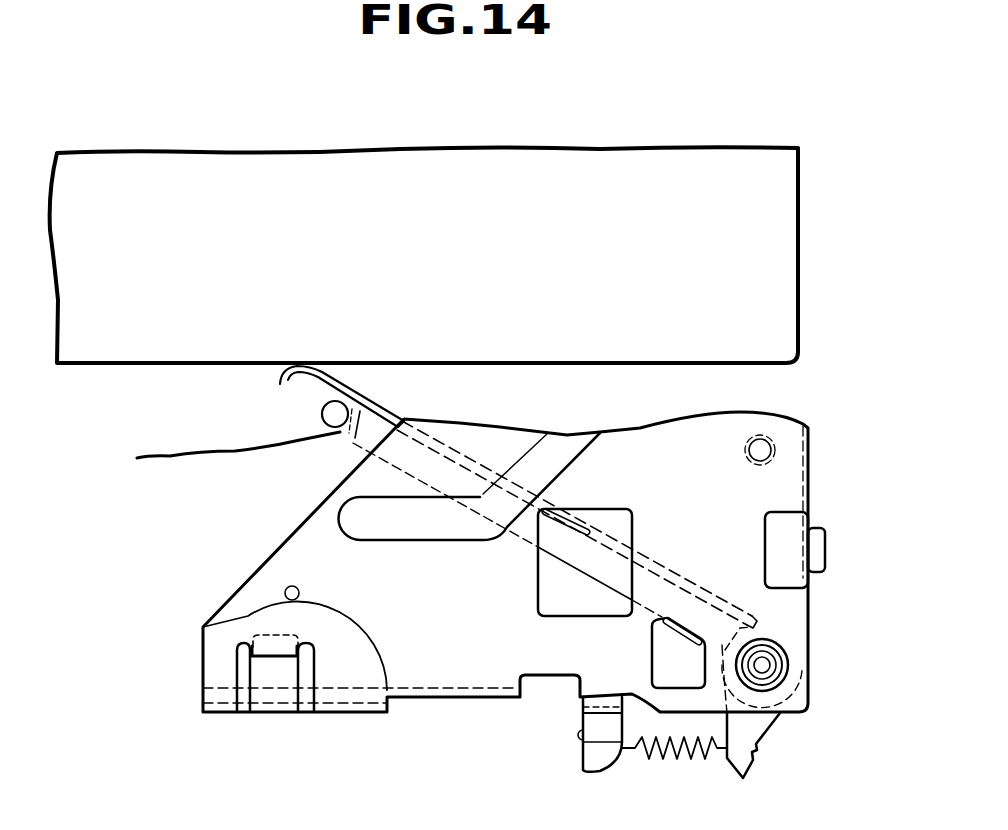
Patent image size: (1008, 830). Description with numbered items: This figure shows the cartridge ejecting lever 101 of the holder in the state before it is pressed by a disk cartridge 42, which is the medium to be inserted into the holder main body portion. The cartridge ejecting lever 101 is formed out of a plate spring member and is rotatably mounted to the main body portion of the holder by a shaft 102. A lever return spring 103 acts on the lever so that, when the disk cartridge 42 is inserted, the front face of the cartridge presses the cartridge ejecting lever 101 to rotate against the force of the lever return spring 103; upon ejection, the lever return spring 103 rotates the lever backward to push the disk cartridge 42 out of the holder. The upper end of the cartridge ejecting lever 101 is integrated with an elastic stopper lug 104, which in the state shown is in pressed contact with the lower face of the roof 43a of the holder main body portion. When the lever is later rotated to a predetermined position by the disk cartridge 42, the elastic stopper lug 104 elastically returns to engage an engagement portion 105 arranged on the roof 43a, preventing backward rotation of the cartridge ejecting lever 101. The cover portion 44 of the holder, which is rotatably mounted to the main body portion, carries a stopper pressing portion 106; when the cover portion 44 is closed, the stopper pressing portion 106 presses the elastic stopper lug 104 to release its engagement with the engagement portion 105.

The disk cartridge 42 is at (770, 249).
The roof 43a is at (182, 515).
The cover portion 44 is at (226, 648).
The cartridge ejecting lever 101 is at (672, 565).
The shaft 102 is at (768, 665).
The lever return spring 103 is at (682, 757).
The elastic stopper lug 104 is at (322, 410).
The engagement portion 105 is at (278, 640).
The stopper pressing portion 106 is at (270, 658).